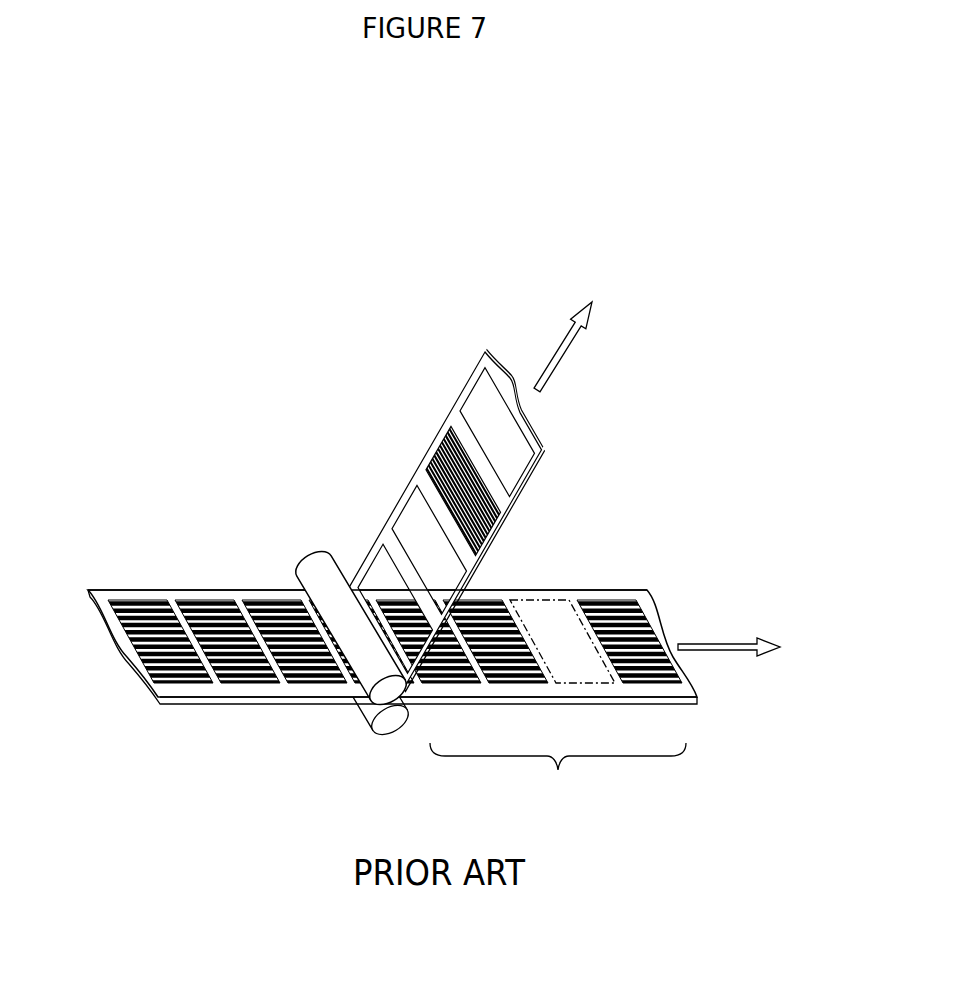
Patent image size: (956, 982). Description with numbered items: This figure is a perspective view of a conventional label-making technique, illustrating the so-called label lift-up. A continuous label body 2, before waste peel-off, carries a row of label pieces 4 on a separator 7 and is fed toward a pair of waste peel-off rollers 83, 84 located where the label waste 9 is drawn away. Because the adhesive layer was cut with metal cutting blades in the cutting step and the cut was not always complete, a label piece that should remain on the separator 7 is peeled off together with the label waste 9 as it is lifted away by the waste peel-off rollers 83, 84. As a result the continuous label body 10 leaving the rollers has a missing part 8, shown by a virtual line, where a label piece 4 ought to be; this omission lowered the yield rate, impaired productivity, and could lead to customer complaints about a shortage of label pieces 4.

The continuous label body before waste peel-off 2 is at (246, 562).
The label pieces 4 is at (478, 594).
The separator 7 is at (547, 687).
The missing part 8 is at (538, 600).
The label waste 9 is at (448, 516).
The continuous label body 10 is at (558, 772).
The waste peel-off roller 83 is at (314, 577).
The waste peel-off roller 84 is at (393, 735).